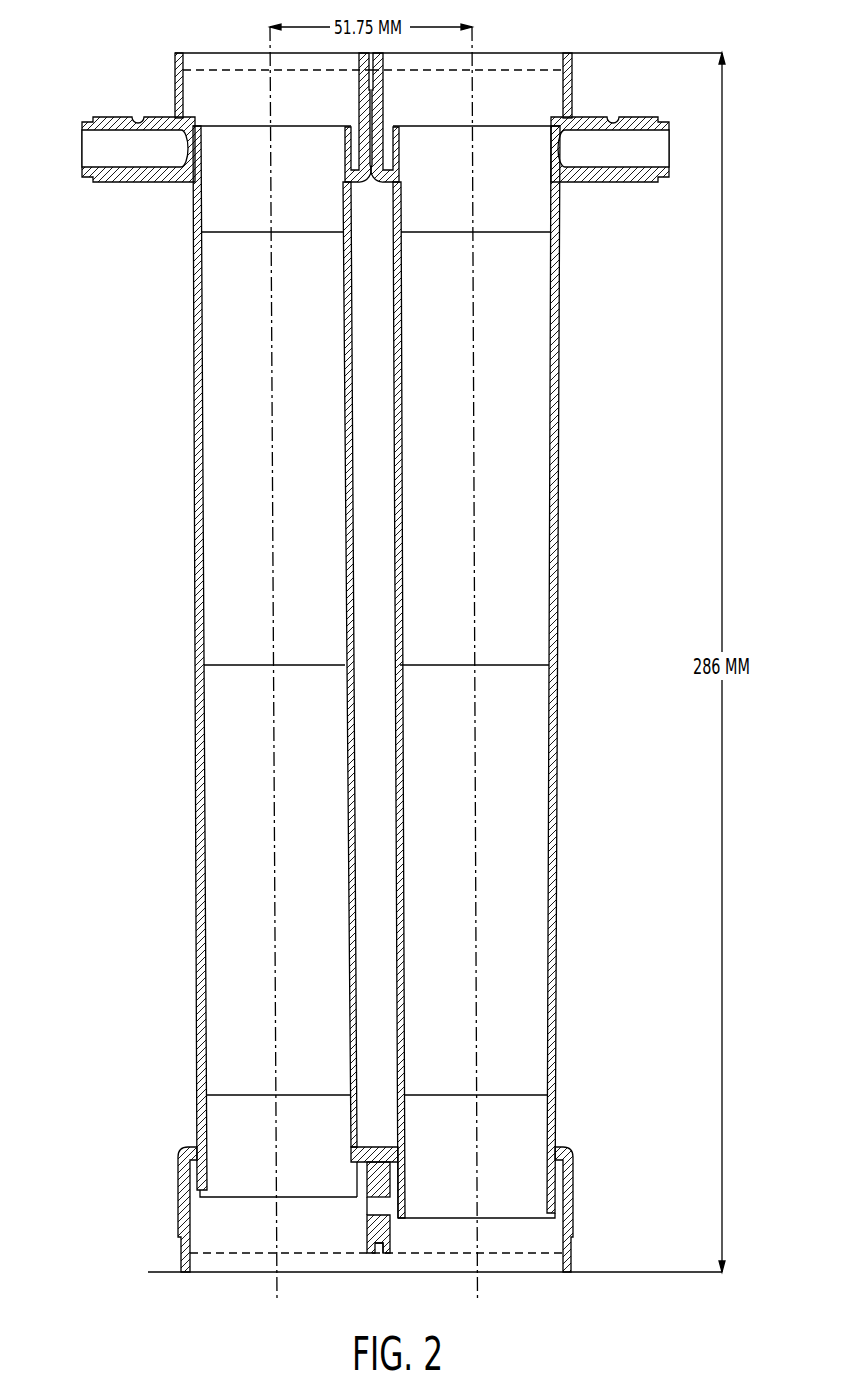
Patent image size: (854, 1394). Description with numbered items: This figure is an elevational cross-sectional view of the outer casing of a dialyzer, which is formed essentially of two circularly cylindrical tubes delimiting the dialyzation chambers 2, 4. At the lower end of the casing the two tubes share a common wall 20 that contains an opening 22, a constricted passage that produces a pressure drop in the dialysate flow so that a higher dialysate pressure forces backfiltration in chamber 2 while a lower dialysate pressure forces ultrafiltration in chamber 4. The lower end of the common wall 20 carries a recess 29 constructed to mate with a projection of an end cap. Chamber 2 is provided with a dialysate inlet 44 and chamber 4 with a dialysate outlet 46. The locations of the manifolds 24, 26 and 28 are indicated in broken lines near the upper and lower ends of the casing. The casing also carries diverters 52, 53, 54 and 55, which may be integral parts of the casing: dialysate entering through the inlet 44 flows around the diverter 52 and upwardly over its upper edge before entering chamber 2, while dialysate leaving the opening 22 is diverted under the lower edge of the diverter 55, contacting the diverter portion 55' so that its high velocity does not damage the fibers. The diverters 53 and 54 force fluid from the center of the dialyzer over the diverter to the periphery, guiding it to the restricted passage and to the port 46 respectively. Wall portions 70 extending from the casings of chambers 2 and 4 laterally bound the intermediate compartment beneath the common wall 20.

The dialyzation chamber 2 is at (212, 716).
The dialyzation chamber 4 is at (540, 716).
The common wall 20 is at (385, 1222).
The opening 22 is at (368, 1205).
The manifold 24 is at (226, 62).
The manifold 26 is at (515, 62).
The manifold 28 is at (197, 1263).
The recess 29 is at (378, 1257).
The dialysate inlet 44 is at (95, 148).
The dialysate outlet 46 is at (656, 150).
The diverter 52 is at (200, 140).
The diverter 53 is at (206, 1171).
The diverter 54 is at (547, 143).
The diverter 55 is at (476, 1181).
The diverter portion 55' is at (420, 1190).
The wall portion 70 is at (573, 1215).